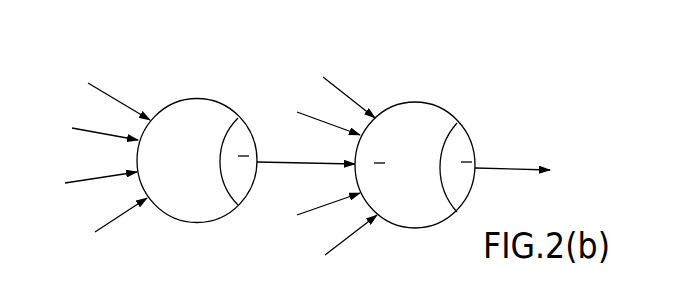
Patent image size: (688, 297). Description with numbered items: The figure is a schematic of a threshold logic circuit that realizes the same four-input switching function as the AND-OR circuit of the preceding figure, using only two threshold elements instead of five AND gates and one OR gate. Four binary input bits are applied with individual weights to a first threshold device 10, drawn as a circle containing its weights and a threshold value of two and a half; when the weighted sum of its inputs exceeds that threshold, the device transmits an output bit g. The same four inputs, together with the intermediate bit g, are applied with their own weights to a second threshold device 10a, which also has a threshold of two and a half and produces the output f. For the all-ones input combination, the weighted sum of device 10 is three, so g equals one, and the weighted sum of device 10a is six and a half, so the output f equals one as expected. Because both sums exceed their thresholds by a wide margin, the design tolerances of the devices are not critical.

The first threshold device 10 is at (193, 110).
The second threshold device 10a is at (435, 118).
The output of first threshold device g is at (306, 151).
The output f is at (518, 171).